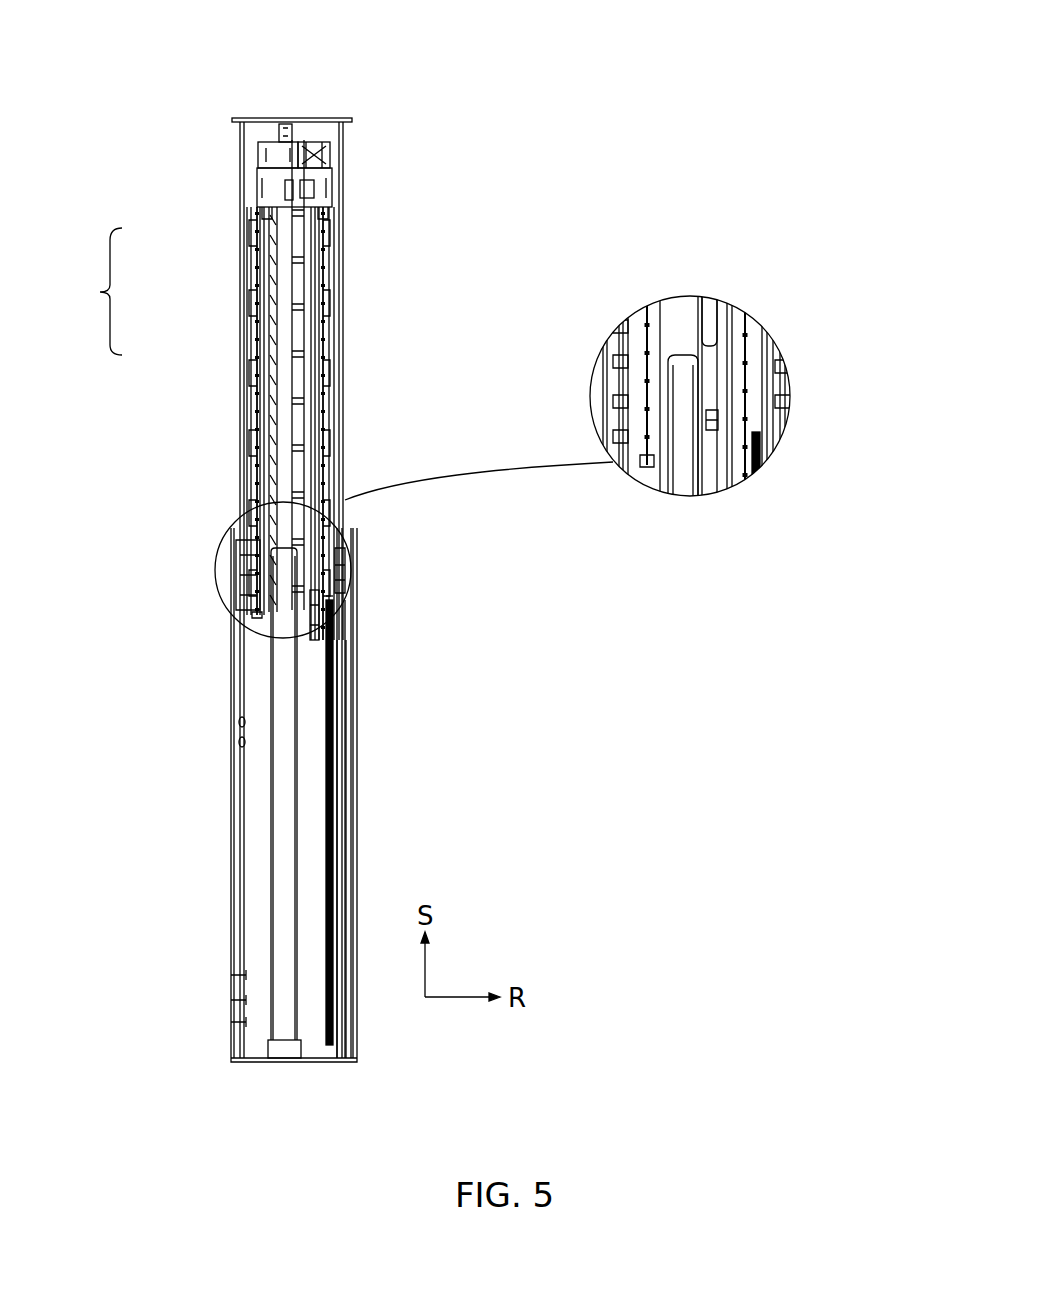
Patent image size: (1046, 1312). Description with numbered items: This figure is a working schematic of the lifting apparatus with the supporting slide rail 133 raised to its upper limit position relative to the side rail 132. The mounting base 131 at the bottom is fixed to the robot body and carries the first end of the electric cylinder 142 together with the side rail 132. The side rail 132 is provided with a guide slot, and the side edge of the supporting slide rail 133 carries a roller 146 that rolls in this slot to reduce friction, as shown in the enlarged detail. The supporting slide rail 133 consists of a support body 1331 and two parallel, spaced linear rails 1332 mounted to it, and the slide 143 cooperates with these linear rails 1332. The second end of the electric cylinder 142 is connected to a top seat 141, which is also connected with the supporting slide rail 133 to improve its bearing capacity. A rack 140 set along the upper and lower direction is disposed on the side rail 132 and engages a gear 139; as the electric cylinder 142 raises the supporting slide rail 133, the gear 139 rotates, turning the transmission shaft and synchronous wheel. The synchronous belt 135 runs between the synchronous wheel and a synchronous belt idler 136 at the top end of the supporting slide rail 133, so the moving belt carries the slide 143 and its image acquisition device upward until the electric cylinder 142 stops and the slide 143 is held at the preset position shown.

The mounting base 131 is at (230, 1051).
The side rail 132 is at (238, 953).
The supporting slide rail 133 is at (191, 423).
The support body 1331 is at (252, 430).
The linear rail 1332 is at (250, 352).
The synchronous belt 135 is at (313, 607).
The synchronous belt idler 136 is at (297, 157).
The gear 139 is at (343, 620).
The rack 140 is at (347, 660).
The top seat 141 is at (307, 118).
The electric cylinder 142 is at (277, 163).
The slide 143 is at (275, 192).
The roller 146 is at (748, 360).